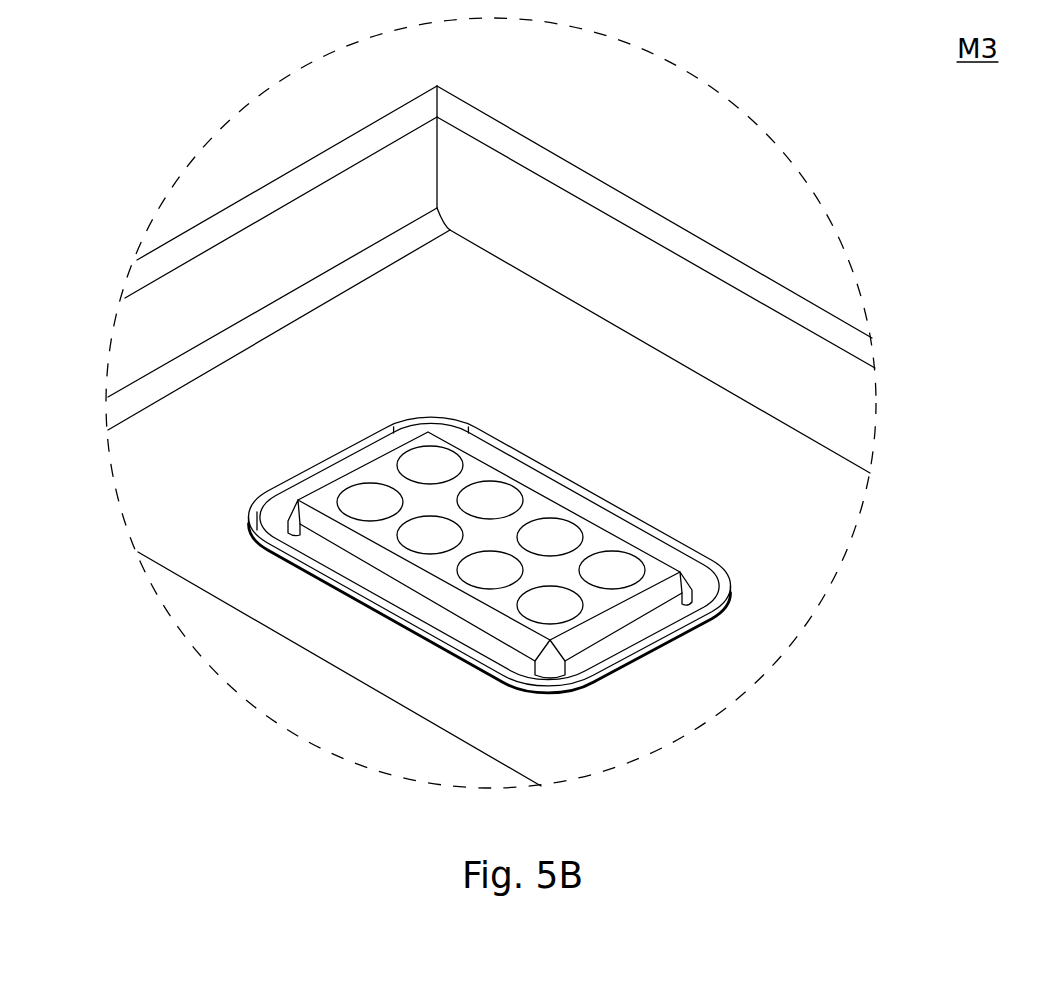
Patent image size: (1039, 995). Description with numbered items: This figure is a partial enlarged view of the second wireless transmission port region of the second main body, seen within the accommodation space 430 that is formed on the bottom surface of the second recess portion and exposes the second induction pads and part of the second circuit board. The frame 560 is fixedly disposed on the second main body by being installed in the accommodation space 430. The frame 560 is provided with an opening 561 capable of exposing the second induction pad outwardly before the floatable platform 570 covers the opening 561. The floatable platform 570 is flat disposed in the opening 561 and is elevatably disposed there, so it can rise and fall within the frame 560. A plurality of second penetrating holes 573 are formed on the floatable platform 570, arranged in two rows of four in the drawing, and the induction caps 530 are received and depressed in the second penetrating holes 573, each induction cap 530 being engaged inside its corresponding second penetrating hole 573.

The accommodation space 430 is at (474, 411).
The induction caps 530 is at (585, 374).
The frame 560 is at (347, 577).
The opening 561 is at (692, 592).
The floatable platform 570 is at (557, 470).
The second penetrating holes 573 is at (613, 550).